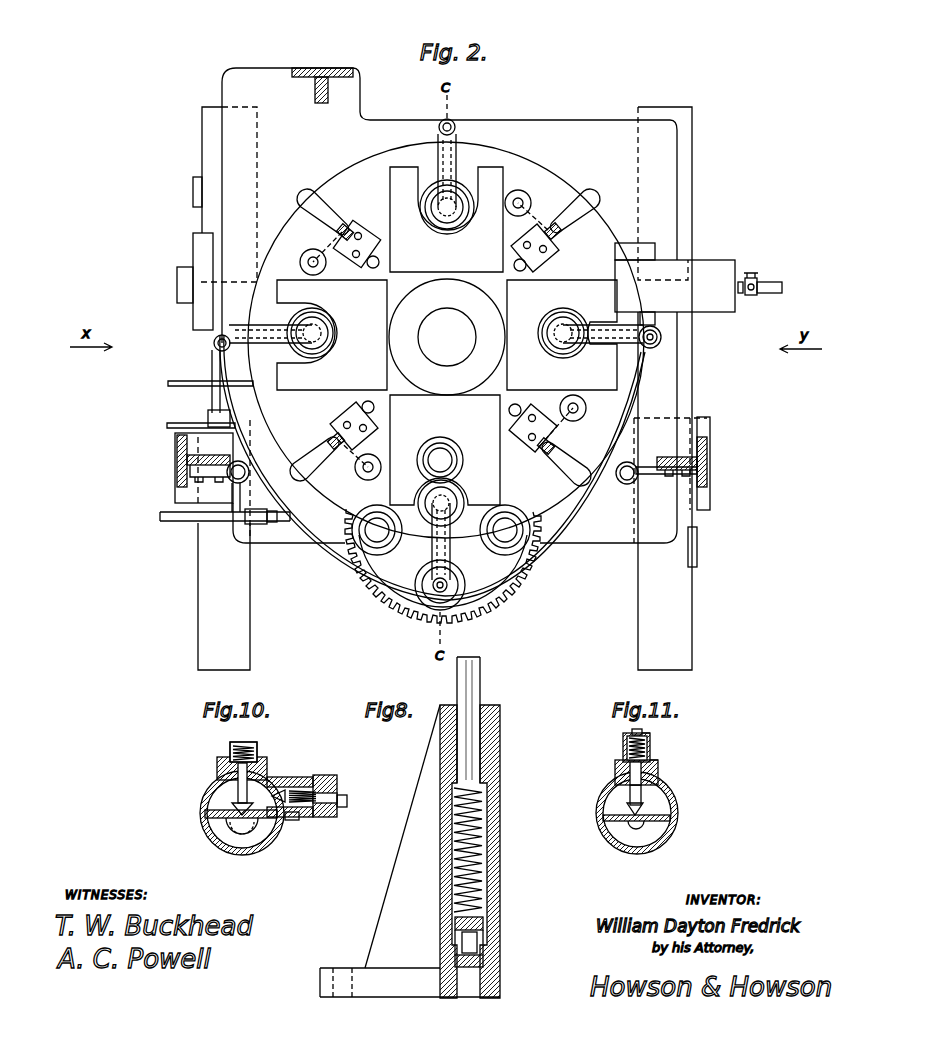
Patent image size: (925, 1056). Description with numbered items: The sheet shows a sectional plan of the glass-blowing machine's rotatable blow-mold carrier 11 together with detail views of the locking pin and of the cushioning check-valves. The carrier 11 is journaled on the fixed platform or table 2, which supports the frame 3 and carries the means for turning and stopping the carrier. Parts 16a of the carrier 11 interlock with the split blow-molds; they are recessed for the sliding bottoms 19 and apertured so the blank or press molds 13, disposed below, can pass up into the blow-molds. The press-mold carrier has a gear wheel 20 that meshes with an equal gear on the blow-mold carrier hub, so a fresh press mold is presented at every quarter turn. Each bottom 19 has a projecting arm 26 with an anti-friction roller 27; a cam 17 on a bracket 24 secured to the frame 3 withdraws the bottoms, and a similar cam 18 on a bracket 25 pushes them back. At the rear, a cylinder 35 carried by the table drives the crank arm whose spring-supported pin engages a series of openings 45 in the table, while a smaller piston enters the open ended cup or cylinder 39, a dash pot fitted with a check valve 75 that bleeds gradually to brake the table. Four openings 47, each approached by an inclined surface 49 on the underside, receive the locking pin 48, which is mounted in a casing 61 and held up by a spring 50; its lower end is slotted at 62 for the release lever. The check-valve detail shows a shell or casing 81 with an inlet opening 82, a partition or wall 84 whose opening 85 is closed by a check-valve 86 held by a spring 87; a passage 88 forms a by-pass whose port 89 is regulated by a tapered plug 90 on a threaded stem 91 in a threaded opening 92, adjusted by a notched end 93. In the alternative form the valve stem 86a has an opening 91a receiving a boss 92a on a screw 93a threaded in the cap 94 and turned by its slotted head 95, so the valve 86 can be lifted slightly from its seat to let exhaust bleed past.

In FIG. 2, the fixed platform or table 2 is at (438, 369).
In FIG. 2, the frame 3 is at (328, 88).
In FIG. 2, the rotatable blow-mold carrier 11 is at (446, 340).
In FIG. 2, the blank or press molds 13 is at (441, 496).
In FIG. 2, the parts of the carrier 16a is at (447, 336).
In FIG. 2, the cam 17 is at (572, 508).
In FIG. 2, the cam 18 is at (322, 552).
In FIG. 2, the bottoms of the blow-molds 19 is at (437, 353).
In FIG. 2, the gear wheel 20 is at (443, 566).
In FIG. 2, the bracket 24 is at (653, 480).
In FIG. 2, the bracket 25 is at (225, 492).
In FIG. 2, the projecting arms 26 is at (456, 160).
In FIG. 2, the anti-friction rollers 27 is at (451, 124).
In FIG. 2, the cylinder 35 is at (211, 281).
In FIG. 2, the open ended cup or cylinder 39 is at (675, 284).
In FIG. 2, the openings 45 is at (380, 260).
In FIG. 2, the openings 47 is at (308, 263).
In FIG. 2, the inclined surface 49 is at (327, 243).
In FIG. 2, the check valve 75 is at (760, 294).
In FIG. 8, the locking pin 48 is at (481, 684).
In FIG. 8, the spring 50 is at (488, 822).
In FIG. 8, the casing 61 is at (500, 757).
In FIG. 8, the slot 62 is at (484, 938).
In FIG. 10, the shell or casing 81 is at (234, 813).
In FIG. 11, the shell or casing 81 is at (676, 797).
In FIG. 10, the inlet opening 82 is at (244, 828).
In FIG. 10, the partition or wall 84 is at (241, 808).
In FIG. 11, the partition or wall 84 is at (622, 821).
In FIG. 10, the opening 85 is at (240, 830).
In FIG. 11, the opening 85 is at (640, 821).
In FIG. 10, the check-valve 86 is at (250, 805).
In FIG. 11, the check-valve 86 is at (644, 808).
In FIG. 11, the valve stem 86a is at (629, 795).
In FIG. 10, the spring 87 is at (258, 751).
In FIG. 11, the spring 87 is at (616, 757).
In FIG. 10, the passage 88 is at (298, 777).
In FIG. 10, the port 89 is at (274, 795).
In FIG. 10, the tapered plug 90 is at (292, 820).
In FIG. 10, the threaded stem 91 is at (308, 806).
In FIG. 11, the opening 91a is at (652, 774).
In FIG. 10, the threaded opening 92 is at (321, 776).
In FIG. 11, the projection or boss 92a is at (660, 762).
In FIG. 10, the notched end 93 is at (348, 807).
In FIG. 11, the screw 93a is at (647, 735).
In FIG. 11, the cap 94 is at (628, 745).
In FIG. 11, the slotted head 95 is at (638, 726).